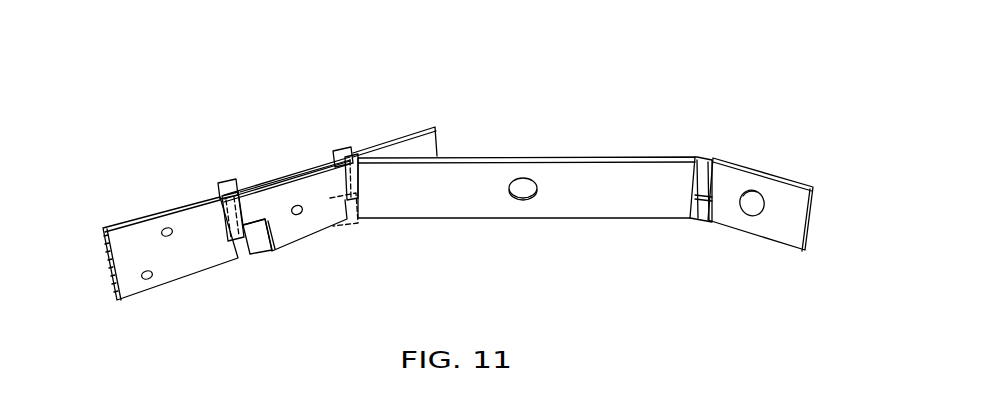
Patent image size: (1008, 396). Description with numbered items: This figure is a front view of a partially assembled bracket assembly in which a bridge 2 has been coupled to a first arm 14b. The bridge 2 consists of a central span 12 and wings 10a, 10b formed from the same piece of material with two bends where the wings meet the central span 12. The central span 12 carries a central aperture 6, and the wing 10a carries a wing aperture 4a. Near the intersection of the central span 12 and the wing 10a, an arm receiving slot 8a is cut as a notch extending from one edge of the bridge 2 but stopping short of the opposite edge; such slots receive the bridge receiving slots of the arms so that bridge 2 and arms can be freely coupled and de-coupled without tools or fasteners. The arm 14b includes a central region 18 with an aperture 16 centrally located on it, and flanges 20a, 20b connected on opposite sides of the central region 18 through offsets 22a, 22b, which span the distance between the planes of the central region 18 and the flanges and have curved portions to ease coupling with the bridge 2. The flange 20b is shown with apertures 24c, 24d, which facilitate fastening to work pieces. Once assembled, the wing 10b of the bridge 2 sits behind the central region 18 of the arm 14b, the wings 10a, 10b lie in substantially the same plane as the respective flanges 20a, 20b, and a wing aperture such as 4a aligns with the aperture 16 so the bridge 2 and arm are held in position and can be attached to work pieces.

The bridge 2 is at (526, 191).
The wing aperture 4a is at (752, 208).
The central aperture 6 is at (525, 200).
The arm receiving slot 8a is at (705, 163).
The wing 10a is at (767, 213).
The wing 10b is at (272, 176).
The central span 12 is at (595, 197).
The first arm 14b is at (141, 250).
The aperture 16 is at (302, 212).
The central region 18 is at (309, 237).
The flange 20a is at (398, 133).
The flange 20b is at (118, 258).
The offset 22a is at (345, 150).
The offset 22b is at (226, 182).
The flange aperture 24c is at (172, 237).
The flange aperture 24d is at (148, 280).